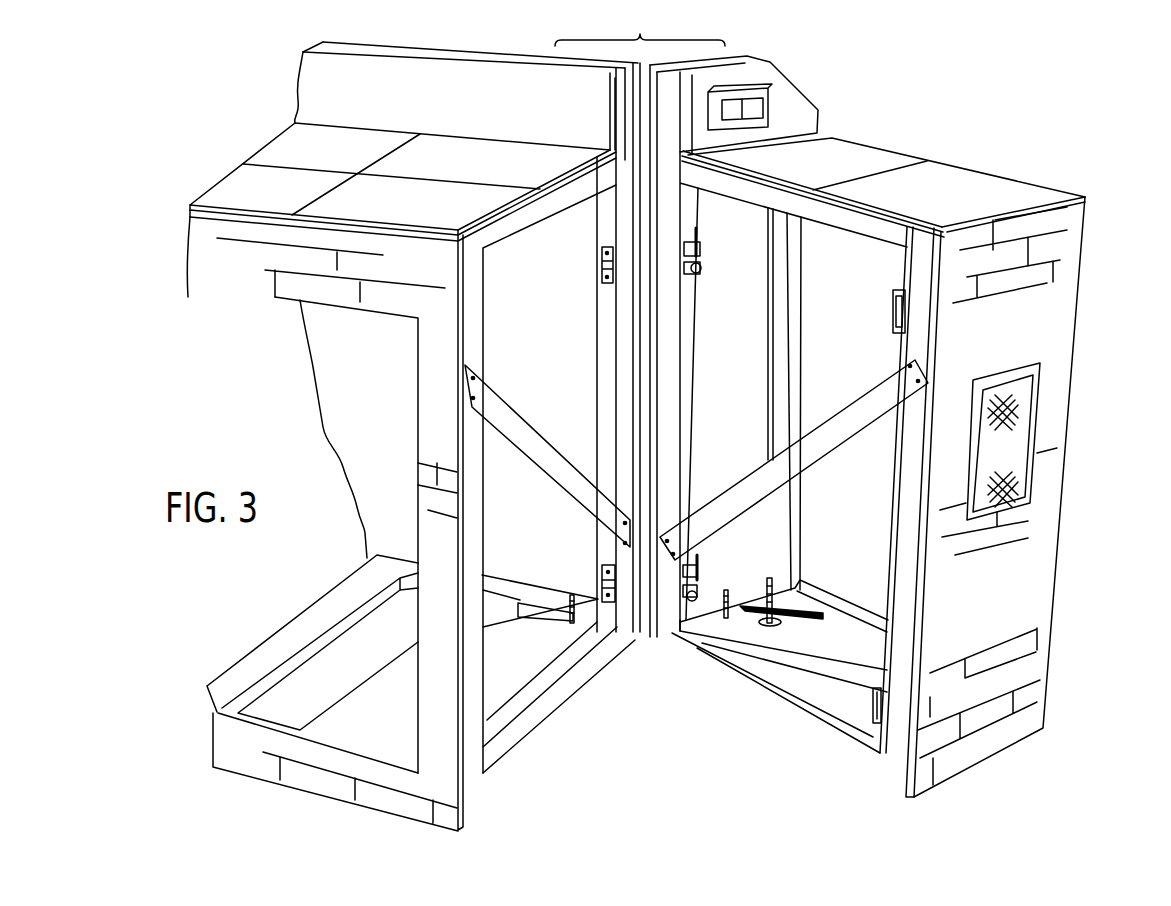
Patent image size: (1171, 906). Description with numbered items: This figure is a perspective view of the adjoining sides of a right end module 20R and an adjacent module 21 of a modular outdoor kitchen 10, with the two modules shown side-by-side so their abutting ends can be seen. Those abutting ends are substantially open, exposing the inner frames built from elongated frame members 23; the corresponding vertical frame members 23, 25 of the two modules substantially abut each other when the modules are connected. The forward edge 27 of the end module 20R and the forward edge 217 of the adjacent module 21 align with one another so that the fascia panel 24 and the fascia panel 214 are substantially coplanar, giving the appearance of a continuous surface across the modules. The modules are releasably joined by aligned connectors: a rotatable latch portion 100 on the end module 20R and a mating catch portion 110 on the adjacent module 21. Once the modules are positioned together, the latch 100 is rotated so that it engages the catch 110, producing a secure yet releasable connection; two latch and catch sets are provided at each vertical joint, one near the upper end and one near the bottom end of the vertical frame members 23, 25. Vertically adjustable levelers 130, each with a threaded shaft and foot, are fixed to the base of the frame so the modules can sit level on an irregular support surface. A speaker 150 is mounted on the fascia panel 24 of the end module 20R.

The cabinet assembly 10 is at (900, 140).
The right end module 20R is at (1037, 183).
The adjacent module 21 is at (337, 100).
The fascia panel 214 is at (297, 295).
The forward edge 217 is at (465, 752).
The frame members 23 is at (672, 583).
The front fascia panel 24 is at (1027, 343).
The vertical frame members 25 is at (477, 538).
The forward edge 27 is at (912, 720).
The rotatable latch portion 100 is at (700, 275).
The catch portion 110 is at (602, 256).
The levelers 130 is at (575, 605).
The speaker 150 is at (1023, 423).